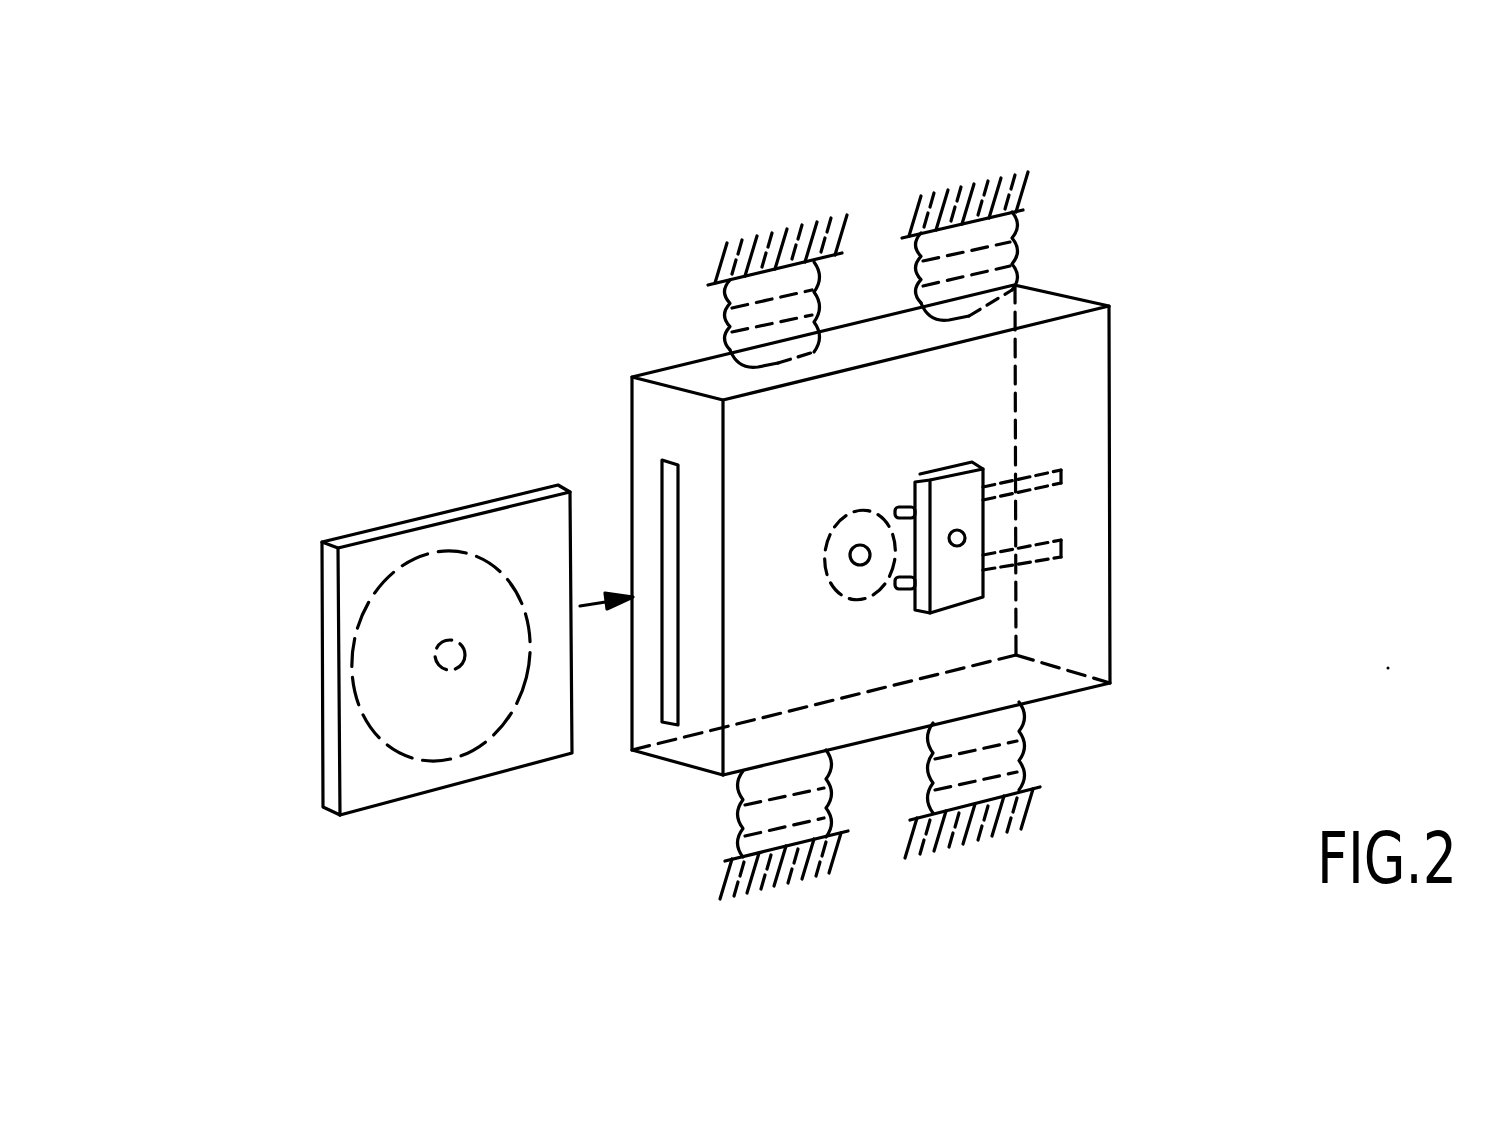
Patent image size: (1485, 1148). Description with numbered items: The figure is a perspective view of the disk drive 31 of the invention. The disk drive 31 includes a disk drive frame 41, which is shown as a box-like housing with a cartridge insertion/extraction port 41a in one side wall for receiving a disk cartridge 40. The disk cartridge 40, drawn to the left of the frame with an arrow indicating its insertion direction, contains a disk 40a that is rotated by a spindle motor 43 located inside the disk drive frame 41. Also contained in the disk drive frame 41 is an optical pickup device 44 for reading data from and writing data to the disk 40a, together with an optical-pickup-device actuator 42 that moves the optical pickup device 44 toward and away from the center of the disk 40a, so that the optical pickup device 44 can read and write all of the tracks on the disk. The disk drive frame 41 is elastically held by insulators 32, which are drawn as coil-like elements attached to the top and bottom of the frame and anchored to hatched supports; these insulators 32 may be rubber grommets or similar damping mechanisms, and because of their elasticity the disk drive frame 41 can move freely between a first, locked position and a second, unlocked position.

The disk drive 31 is at (839, 541).
The insulators 32 is at (727, 323).
The disk cartridge 40 is at (382, 650).
The disk 40a is at (367, 718).
The disk drive frame 41 is at (838, 530).
The cartridge insertion/extraction port 41a is at (668, 498).
The optical-pickup-device actuator 42 is at (1041, 508).
The spindle motor 43 is at (863, 597).
The optical pickup device 44 is at (980, 563).